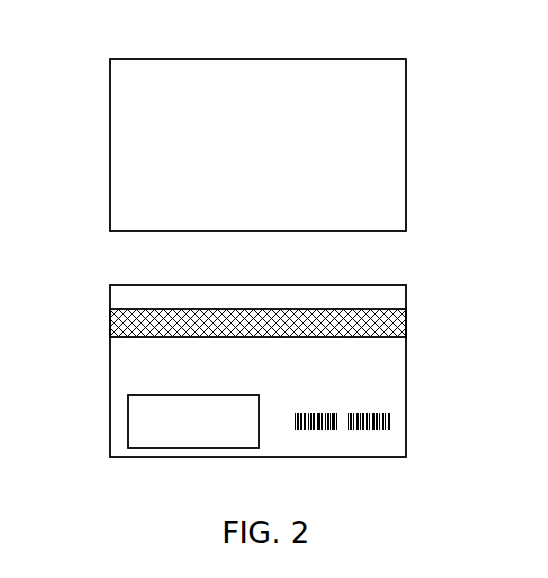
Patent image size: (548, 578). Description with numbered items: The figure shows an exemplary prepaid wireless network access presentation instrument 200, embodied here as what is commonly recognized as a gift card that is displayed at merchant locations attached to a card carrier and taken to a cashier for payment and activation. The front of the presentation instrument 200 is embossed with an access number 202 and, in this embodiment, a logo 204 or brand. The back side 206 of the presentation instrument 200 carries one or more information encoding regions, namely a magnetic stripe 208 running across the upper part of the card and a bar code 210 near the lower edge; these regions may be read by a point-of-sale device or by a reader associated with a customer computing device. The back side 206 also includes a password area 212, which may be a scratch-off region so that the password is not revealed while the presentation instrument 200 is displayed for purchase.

The presentation instrument 200 is at (406, 103).
The access number 202 is at (358, 164).
The logo 204 is at (224, 84).
The back side 206 is at (406, 288).
The magnetic stripe 208 is at (406, 316).
The bar code 210 is at (390, 423).
The password area 212 is at (128, 425).